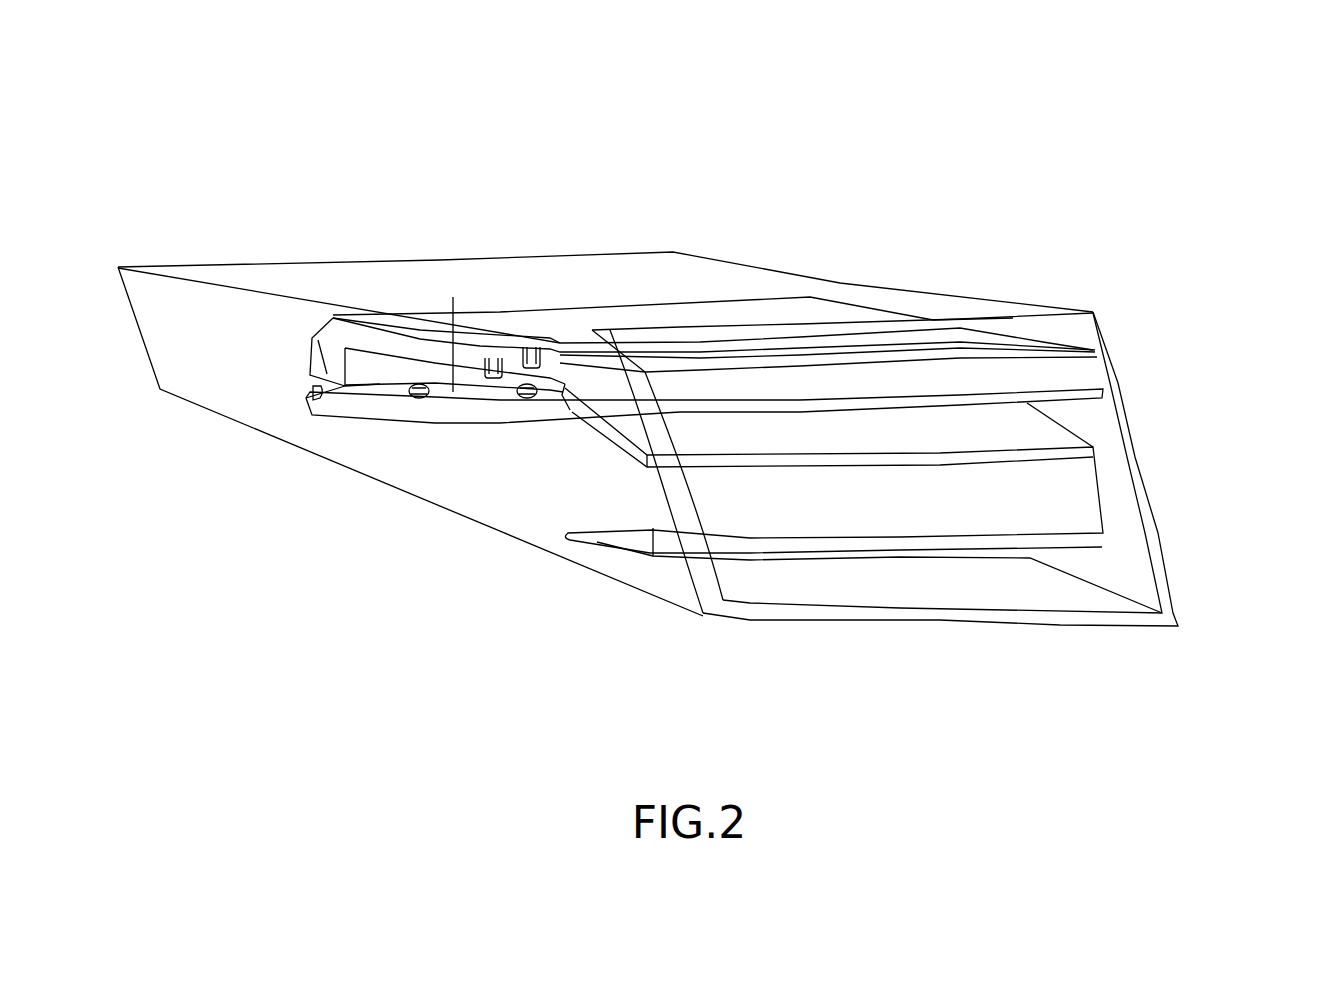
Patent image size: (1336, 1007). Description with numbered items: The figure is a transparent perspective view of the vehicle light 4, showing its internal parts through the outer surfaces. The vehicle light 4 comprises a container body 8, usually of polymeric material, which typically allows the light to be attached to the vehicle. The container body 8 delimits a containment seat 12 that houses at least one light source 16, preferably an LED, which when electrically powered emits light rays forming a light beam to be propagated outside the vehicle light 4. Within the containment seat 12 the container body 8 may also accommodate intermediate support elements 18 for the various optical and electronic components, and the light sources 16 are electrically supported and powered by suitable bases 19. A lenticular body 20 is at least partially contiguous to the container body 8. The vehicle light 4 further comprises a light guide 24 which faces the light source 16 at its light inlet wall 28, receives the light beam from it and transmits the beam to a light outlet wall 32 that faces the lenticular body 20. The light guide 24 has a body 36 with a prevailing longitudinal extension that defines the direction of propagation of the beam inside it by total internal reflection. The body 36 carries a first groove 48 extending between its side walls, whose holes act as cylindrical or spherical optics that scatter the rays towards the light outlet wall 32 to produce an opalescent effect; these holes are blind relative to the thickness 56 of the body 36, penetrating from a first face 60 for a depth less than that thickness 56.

The vehicle light 4 is at (723, 190).
The container body 8 is at (208, 358).
The containment seat 12 is at (490, 488).
The light source 16 is at (410, 400).
The intermediate support elements 18 is at (575, 414).
The bases 19 is at (385, 375).
The lenticular body 20 is at (1130, 557).
The light guide 24 is at (417, 348).
The body 36 is at (448, 278).
The light inlet wall 28 is at (322, 368).
The light outlet wall 32 is at (1083, 375).
The first groove 48 is at (490, 352).
The thickness 56 is at (443, 400).
The first face 60 is at (323, 403).